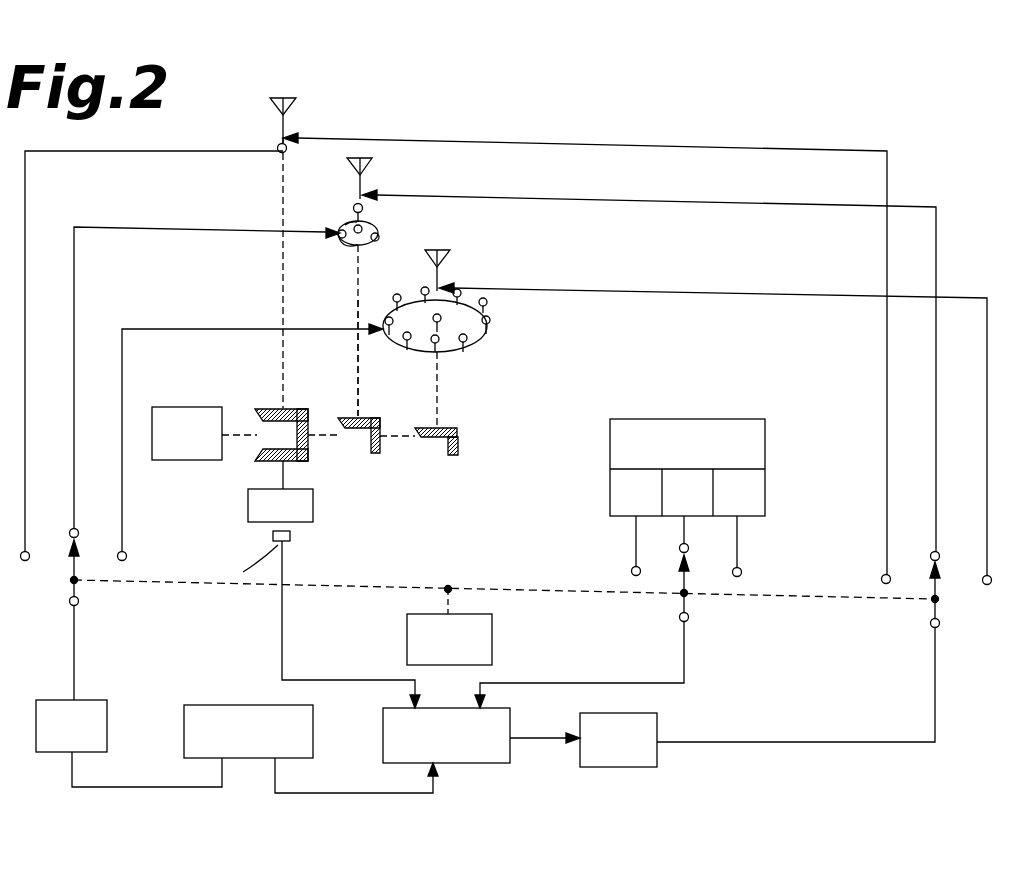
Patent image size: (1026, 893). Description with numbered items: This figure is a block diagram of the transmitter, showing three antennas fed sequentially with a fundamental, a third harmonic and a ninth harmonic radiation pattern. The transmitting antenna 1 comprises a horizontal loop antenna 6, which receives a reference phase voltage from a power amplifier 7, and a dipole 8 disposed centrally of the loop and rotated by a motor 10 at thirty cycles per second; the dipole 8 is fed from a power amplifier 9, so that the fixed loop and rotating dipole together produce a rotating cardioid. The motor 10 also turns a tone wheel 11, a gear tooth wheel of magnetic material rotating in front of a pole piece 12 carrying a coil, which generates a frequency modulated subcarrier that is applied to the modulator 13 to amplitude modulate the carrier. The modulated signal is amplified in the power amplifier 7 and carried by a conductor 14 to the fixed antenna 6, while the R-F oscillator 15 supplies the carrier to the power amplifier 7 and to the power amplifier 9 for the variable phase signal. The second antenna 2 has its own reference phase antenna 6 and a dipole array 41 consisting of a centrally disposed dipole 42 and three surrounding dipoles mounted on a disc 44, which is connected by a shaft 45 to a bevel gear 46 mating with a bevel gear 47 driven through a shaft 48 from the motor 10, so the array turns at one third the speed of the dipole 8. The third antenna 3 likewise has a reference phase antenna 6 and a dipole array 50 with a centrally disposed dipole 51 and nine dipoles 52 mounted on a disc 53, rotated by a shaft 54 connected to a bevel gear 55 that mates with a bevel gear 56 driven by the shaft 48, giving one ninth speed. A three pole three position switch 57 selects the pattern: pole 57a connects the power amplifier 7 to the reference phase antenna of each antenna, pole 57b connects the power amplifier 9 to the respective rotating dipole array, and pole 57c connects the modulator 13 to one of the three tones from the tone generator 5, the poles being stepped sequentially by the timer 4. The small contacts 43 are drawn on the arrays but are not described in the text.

The transmitting antenna 1 is at (262, 136).
The antenna 2 is at (372, 296).
The antenna 3 is at (463, 321).
The timer 4 is at (493, 643).
The tone generator 5 is at (742, 412).
The horizontal loop antenna 6 is at (297, 98).
The power amplifier 7 is at (658, 720).
The dipole 8 is at (288, 149).
The power amplifier 9 is at (108, 727).
The motor 10 is at (186, 410).
The tone wheel 11 is at (314, 508).
The pole piece 12 is at (291, 540).
The modulator 13 is at (459, 763).
The conductor 14 is at (886, 430).
The R-F oscillator 15 is at (229, 706).
The dipole array 41 is at (343, 254).
The centrally disposed dipole 42 is at (379, 226).
The contact 43 is at (356, 205).
The disc 44 is at (344, 224).
The shaft 45 is at (357, 348).
The bevel gear 46 is at (372, 418).
The bevel gear 47 is at (381, 447).
The shaft 48 is at (340, 437).
The dipole array 50 is at (500, 327).
The centrally disposed dipole 51 is at (432, 316).
The dipoles 52 is at (463, 352).
The disc 53 is at (407, 350).
The shaft 54 is at (440, 385).
The bevel gear 55 is at (448, 428).
The bevel gear 56 is at (460, 450).
The switch 57 is at (835, 606).
The pole 57a is at (961, 608).
The pole 57b is at (45, 575).
The pole 57c is at (707, 574).